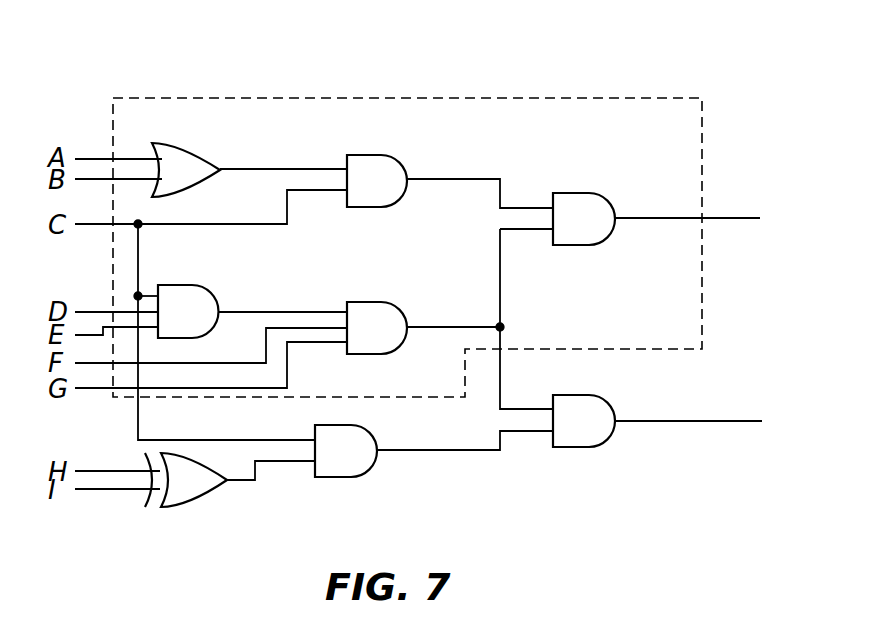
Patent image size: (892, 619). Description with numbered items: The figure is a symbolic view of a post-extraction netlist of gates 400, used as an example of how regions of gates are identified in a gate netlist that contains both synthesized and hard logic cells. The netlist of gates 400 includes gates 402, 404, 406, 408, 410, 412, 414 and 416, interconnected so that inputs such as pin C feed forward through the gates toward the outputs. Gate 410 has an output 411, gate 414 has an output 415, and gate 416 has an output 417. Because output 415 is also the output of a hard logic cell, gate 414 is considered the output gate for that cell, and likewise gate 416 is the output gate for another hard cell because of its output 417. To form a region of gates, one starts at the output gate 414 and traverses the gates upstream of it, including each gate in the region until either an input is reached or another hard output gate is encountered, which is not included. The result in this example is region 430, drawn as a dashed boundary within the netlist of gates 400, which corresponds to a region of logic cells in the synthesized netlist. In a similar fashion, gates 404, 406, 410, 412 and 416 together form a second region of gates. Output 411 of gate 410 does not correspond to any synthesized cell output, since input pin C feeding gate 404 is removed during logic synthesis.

The netlist of gates 400 is at (712, 76).
The gate 402 is at (198, 143).
The gate 404 is at (215, 292).
The gate 406 is at (214, 496).
The gate 408 is at (364, 155).
The gate 410 is at (364, 302).
The output of gate 410 411 is at (408, 333).
The gate 412 is at (336, 477).
The gate 414 is at (590, 193).
The output of gate 414 415 is at (614, 225).
The gate 416 is at (582, 447).
The output of gate 416 417 is at (626, 418).
The region of gates 430 is at (702, 253).